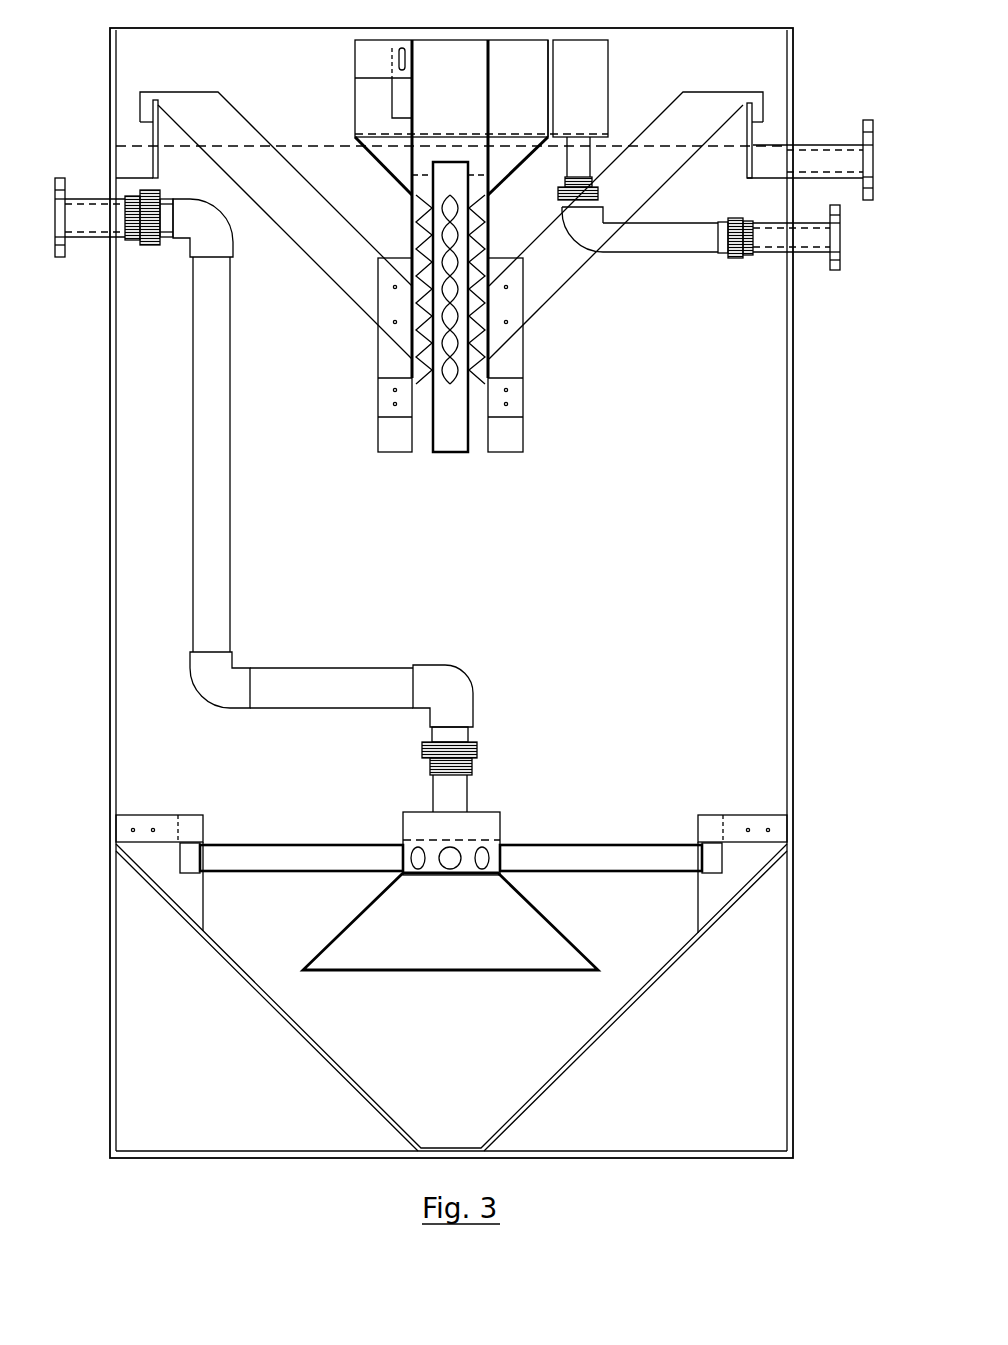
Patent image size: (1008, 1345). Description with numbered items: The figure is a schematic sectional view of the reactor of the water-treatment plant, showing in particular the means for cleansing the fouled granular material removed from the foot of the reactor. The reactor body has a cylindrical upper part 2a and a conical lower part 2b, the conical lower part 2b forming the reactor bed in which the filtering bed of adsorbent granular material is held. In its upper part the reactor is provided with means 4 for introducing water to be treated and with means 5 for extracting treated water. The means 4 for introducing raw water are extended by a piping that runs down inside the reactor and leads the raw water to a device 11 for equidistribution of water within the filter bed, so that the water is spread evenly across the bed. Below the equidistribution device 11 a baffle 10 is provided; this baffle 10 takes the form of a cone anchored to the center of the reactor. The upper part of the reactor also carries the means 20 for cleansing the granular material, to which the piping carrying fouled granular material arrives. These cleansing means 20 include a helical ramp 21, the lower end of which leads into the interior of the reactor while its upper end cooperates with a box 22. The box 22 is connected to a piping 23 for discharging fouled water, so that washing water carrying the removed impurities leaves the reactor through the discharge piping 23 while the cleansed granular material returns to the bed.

The cylindrical upper part 2a is at (573, 1062).
The conical lower part 2b is at (795, 683).
The means for introducing water to be treated 4 is at (80, 222).
The means for extracting treated water 5 is at (860, 142).
The baffle 10 is at (570, 942).
The device for equidistribution of water 11 is at (627, 836).
The means for cleansing the granular material 20 is at (395, 229).
The helical ramp 21 is at (487, 232).
The box 22 is at (598, 76).
The piping for discharging fouled water 23 is at (810, 255).